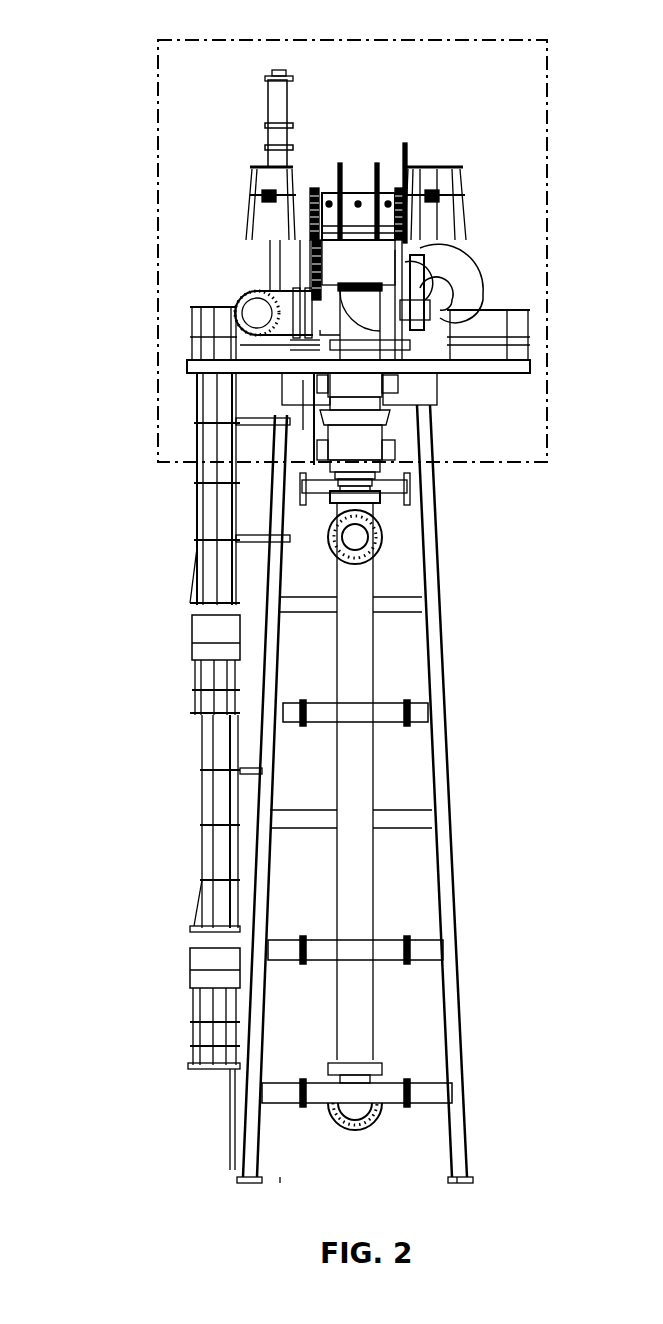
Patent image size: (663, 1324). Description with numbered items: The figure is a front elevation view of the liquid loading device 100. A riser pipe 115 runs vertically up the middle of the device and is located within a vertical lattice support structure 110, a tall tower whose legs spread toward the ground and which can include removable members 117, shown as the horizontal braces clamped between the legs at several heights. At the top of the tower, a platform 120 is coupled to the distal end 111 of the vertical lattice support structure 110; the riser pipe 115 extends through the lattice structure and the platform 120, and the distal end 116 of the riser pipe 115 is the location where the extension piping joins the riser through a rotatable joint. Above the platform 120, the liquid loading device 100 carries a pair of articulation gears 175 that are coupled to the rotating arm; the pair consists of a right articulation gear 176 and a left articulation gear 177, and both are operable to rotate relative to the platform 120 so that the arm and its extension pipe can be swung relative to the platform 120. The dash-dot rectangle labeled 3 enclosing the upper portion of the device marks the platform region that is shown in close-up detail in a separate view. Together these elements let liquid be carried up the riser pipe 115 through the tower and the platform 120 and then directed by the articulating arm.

The liquid loading device 100 is at (140, 32).
The detail region shown in FIG. 3 is at (520, 40).
The vertical lattice support structure 110 is at (440, 690).
The distal end 111 is at (447, 394).
The riser pipe 115 is at (362, 666).
The distal end 116 is at (322, 465).
The removable members 117 is at (378, 712).
The platform 120 is at (513, 327).
The pair of articulation gears 175 is at (397, 193).
The right articulation gear 176 is at (318, 188).
The left articulation gear 177 is at (407, 197).